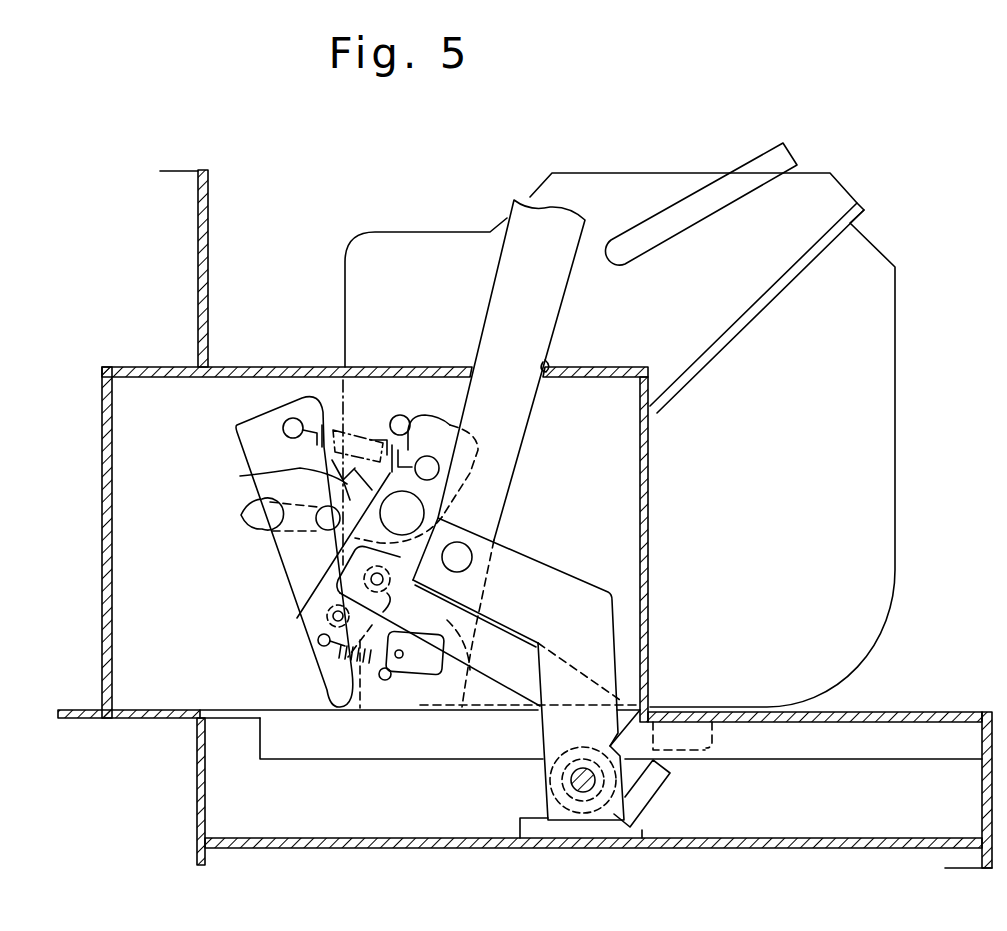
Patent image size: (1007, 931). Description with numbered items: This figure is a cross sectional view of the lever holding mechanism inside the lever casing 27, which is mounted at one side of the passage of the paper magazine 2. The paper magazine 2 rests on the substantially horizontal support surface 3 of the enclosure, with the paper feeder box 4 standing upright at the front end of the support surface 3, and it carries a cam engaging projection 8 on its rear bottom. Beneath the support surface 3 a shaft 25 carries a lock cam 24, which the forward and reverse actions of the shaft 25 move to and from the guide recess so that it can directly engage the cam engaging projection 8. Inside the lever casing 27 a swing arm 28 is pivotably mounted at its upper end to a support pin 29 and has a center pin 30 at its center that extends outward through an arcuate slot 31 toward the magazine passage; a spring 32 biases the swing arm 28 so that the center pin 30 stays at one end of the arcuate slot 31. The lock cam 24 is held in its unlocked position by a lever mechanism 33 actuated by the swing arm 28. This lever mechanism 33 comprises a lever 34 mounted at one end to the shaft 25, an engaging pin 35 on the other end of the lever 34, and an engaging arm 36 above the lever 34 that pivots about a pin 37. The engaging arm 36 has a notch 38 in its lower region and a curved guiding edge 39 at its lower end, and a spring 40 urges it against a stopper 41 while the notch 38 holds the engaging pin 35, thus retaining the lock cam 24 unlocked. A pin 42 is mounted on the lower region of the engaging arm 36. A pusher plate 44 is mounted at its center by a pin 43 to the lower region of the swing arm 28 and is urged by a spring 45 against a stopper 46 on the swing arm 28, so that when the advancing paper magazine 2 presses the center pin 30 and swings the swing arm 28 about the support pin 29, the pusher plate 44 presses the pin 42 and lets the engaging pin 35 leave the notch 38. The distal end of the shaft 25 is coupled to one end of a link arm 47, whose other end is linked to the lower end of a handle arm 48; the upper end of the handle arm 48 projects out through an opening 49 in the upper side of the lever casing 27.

The paper magazine 2 is at (880, 334).
The support surface 3 is at (907, 712).
The paper feeder box 4 is at (205, 209).
The cam engaging projection 8 is at (712, 750).
The lock cam 24 is at (650, 793).
The shaft 25 is at (568, 781).
The lever casing 27 is at (238, 366).
The swing arm 28 is at (250, 451).
The support pin 29 is at (283, 426).
The center pin 30 is at (318, 524).
The arcuate slot 31 is at (242, 515).
The spring 32 is at (240, 476).
The lever mechanism 33 is at (297, 618).
The lever 34 is at (492, 668).
The engaging pin 35 is at (335, 563).
The engaging arm 36 is at (420, 414).
The pin 37 is at (408, 511).
The notch 38 is at (335, 662).
The curved guiding edge 39 is at (318, 640).
The spring 40 is at (335, 422).
The stopper 41 is at (396, 414).
The pin 42 is at (362, 580).
The pin 43 is at (488, 622).
The pusher plate 44 is at (411, 668).
The spring 45 is at (363, 686).
The stopper 46 is at (386, 682).
The link arm 47 is at (598, 622).
The handle arm 48 is at (548, 292).
The opening 49 is at (543, 362).